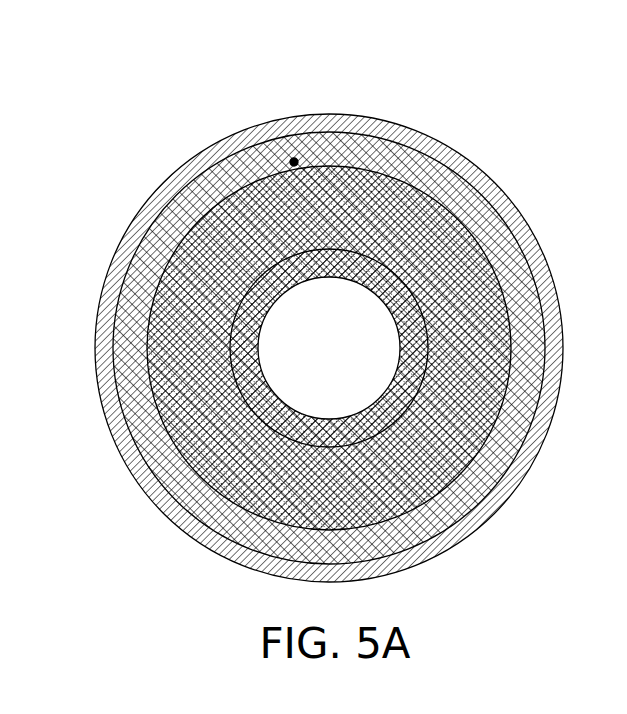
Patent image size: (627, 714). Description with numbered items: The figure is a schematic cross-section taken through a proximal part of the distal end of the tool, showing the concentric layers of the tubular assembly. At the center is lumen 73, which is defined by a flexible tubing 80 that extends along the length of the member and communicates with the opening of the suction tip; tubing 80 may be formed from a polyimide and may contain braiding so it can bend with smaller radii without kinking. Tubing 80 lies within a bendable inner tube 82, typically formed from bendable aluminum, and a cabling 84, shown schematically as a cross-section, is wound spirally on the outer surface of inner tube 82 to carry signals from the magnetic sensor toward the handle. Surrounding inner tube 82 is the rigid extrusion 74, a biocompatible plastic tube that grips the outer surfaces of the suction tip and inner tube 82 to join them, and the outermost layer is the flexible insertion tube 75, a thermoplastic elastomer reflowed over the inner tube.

The lumen 73 is at (303, 345).
The extrusion 74 is at (343, 138).
The insertion tube 75 is at (180, 161).
The flexible tubing 80 is at (383, 267).
The bendable inner tube 82 is at (392, 207).
The cabling 84 is at (286, 154).